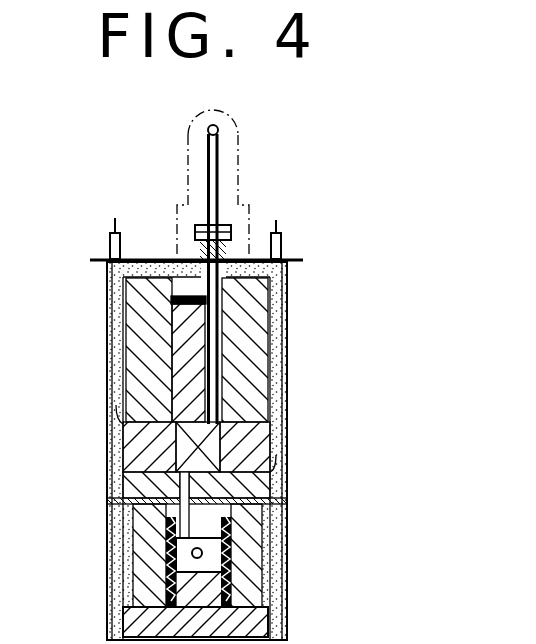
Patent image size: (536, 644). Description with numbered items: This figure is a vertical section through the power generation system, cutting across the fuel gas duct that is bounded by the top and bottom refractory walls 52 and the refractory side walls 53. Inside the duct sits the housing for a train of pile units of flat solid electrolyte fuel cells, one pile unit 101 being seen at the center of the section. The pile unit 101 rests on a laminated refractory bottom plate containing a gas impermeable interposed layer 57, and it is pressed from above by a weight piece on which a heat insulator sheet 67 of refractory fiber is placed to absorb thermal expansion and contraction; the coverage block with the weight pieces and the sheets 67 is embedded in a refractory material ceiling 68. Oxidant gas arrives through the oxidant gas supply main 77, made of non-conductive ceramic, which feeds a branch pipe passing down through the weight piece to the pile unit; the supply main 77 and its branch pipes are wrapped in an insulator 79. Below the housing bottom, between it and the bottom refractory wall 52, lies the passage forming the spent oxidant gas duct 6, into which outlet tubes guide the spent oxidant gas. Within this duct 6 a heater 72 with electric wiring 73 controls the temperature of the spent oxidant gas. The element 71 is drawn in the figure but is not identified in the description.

The spent oxidant gas duct 6 is at (257, 552).
The refractory wall 52 is at (127, 628).
The refractory side wall 53 is at (133, 340).
The gas impermeable interposed layer 57 is at (112, 500).
The heat insulator sheet 67 is at (193, 292).
The refractory material ceiling 68 is at (283, 293).
The diaphragm 71 is at (190, 477).
The heater 72 is at (257, 575).
The electric wiring 73 is at (115, 222).
The oxidant gas supply main 77 is at (216, 134).
The insulator 79 is at (223, 186).
The pile unit of flat fuel cells of solid electrolyte 101 is at (213, 448).